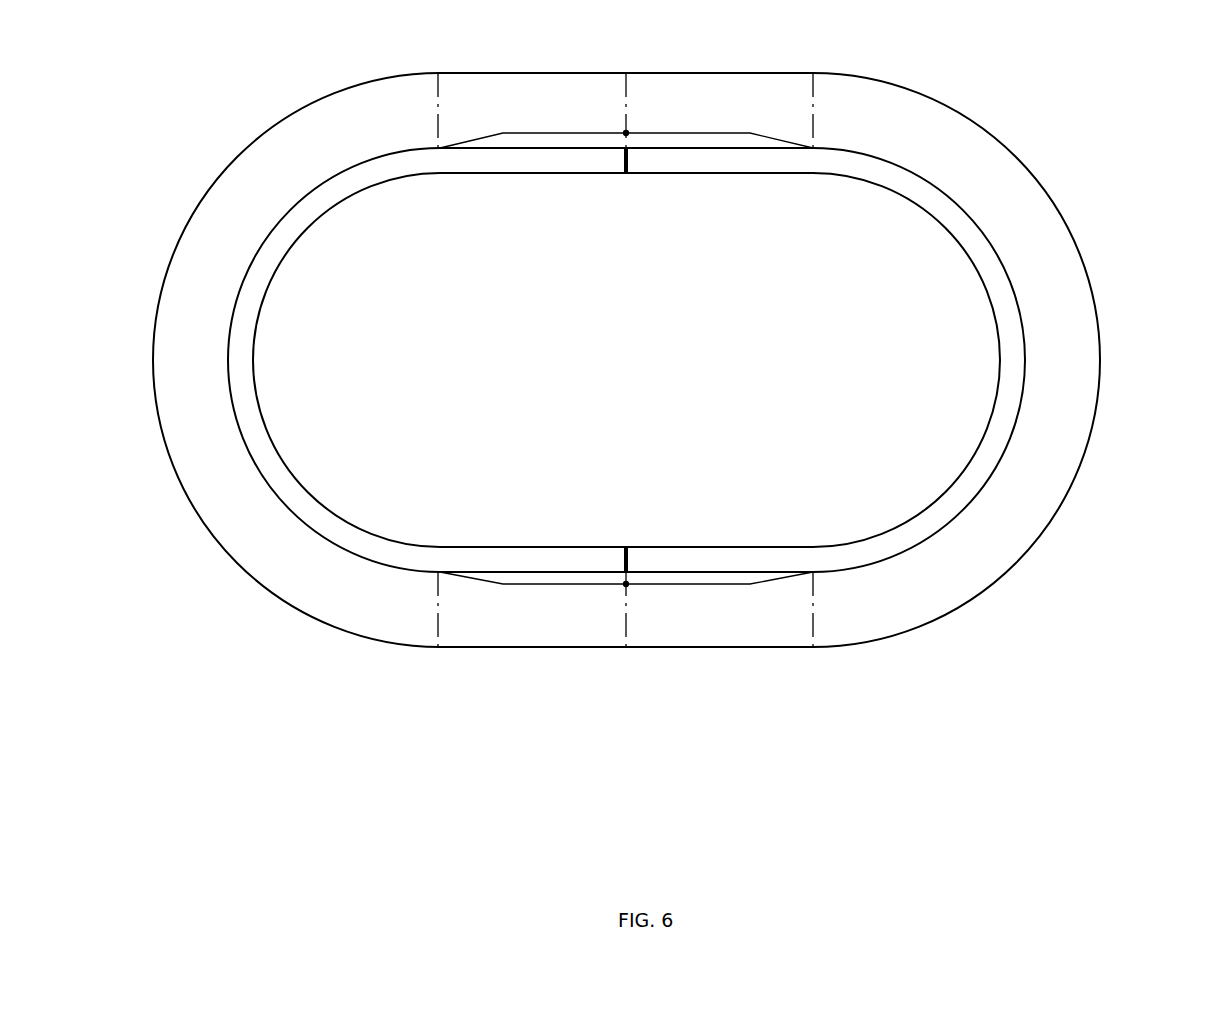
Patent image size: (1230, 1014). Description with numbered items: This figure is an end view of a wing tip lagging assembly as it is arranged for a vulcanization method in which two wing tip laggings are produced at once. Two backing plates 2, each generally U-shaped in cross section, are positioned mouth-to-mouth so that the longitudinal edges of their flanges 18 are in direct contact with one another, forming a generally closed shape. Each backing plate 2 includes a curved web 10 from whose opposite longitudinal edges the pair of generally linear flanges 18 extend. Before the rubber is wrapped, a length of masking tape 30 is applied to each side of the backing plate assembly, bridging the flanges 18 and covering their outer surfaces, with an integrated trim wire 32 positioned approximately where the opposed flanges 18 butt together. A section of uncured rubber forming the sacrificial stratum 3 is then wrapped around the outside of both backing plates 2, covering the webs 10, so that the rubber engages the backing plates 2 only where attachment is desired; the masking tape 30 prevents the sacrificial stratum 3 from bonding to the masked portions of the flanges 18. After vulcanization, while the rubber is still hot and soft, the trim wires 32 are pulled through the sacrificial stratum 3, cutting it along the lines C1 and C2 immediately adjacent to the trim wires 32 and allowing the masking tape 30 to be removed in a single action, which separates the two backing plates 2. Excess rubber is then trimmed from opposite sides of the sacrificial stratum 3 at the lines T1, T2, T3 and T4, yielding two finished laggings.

The backing plate 2 is at (1026, 360).
The sacrificial stratum 3 is at (1060, 290).
The curved web 10 is at (1008, 407).
The flanges 18 is at (540, 160).
The masking tape 30 is at (552, 584).
The trim wire 32 is at (626, 133).
The cutting line C1 is at (626, 622).
The cutting line C2 is at (626, 98).
The trim line T1 is at (813, 622).
The trim line T2 is at (440, 622).
The trim line T3 is at (813, 110).
The trim line T4 is at (438, 110).